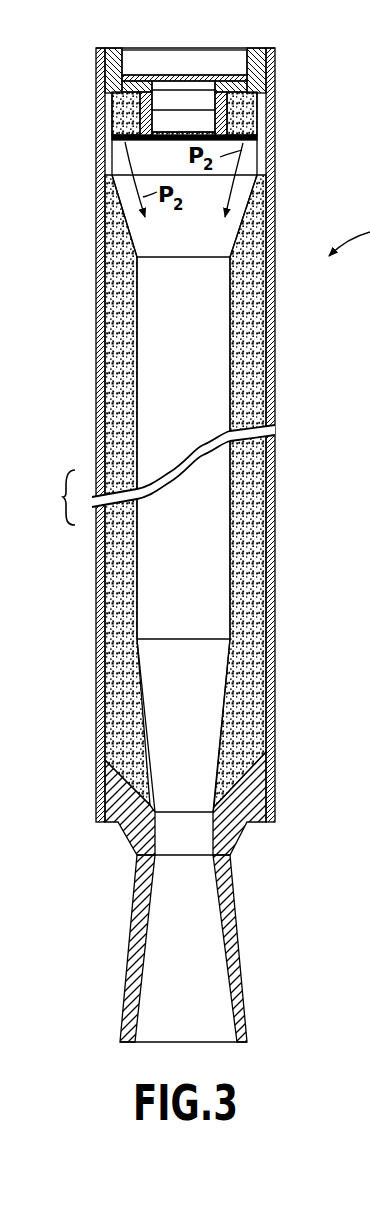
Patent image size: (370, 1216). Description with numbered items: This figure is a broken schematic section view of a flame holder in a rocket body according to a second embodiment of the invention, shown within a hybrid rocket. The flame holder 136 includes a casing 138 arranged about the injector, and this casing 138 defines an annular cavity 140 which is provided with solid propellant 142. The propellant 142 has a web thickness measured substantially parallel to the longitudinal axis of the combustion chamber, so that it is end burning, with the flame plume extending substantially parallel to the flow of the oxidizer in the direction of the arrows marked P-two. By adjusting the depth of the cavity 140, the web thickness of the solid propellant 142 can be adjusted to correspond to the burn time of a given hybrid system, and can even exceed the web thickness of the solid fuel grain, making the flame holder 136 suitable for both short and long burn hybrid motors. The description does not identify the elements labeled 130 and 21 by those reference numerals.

The igniter cup 130 is at (152, 122).
The flame holder 136 is at (195, 137).
The casing 138 is at (108, 63).
The annular cavity 140 is at (108, 127).
The solid propellant 142 is at (108, 96).
The gas generator (partially shown numeral) 21 is at (355, 592).